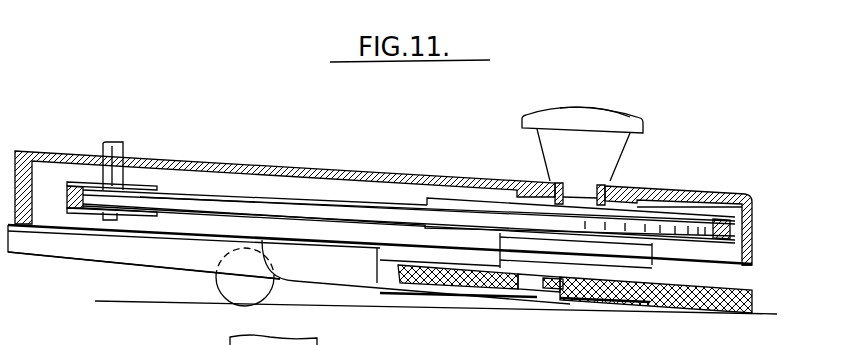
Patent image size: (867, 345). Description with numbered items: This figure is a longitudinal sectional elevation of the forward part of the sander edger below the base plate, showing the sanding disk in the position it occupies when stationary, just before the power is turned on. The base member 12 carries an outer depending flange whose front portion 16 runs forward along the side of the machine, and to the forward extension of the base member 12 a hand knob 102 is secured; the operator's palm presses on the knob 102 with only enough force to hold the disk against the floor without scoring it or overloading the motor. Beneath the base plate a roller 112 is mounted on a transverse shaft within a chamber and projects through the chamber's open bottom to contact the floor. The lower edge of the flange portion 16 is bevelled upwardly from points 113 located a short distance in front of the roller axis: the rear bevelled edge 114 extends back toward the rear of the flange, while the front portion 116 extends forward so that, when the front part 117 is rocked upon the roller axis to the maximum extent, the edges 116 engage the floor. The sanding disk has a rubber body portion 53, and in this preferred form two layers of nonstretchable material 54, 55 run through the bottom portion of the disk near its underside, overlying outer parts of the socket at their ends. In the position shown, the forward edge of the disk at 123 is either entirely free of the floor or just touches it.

The base member 12 is at (138, 167).
The hand knob 102 is at (620, 109).
The front part 117 is at (640, 186).
The rear bevelled edge 114 is at (88, 263).
The front portion of outer flange 16 is at (155, 263).
The roller 112 is at (230, 300).
The points 113 is at (355, 292).
The front portion of flange edge 116 is at (385, 292).
The nonstretchable material 55 is at (440, 287).
The nonstretchable material 54 is at (475, 287).
The body portion of sanding disk 53 is at (660, 288).
The forward edge of sanding disk 123 is at (750, 317).